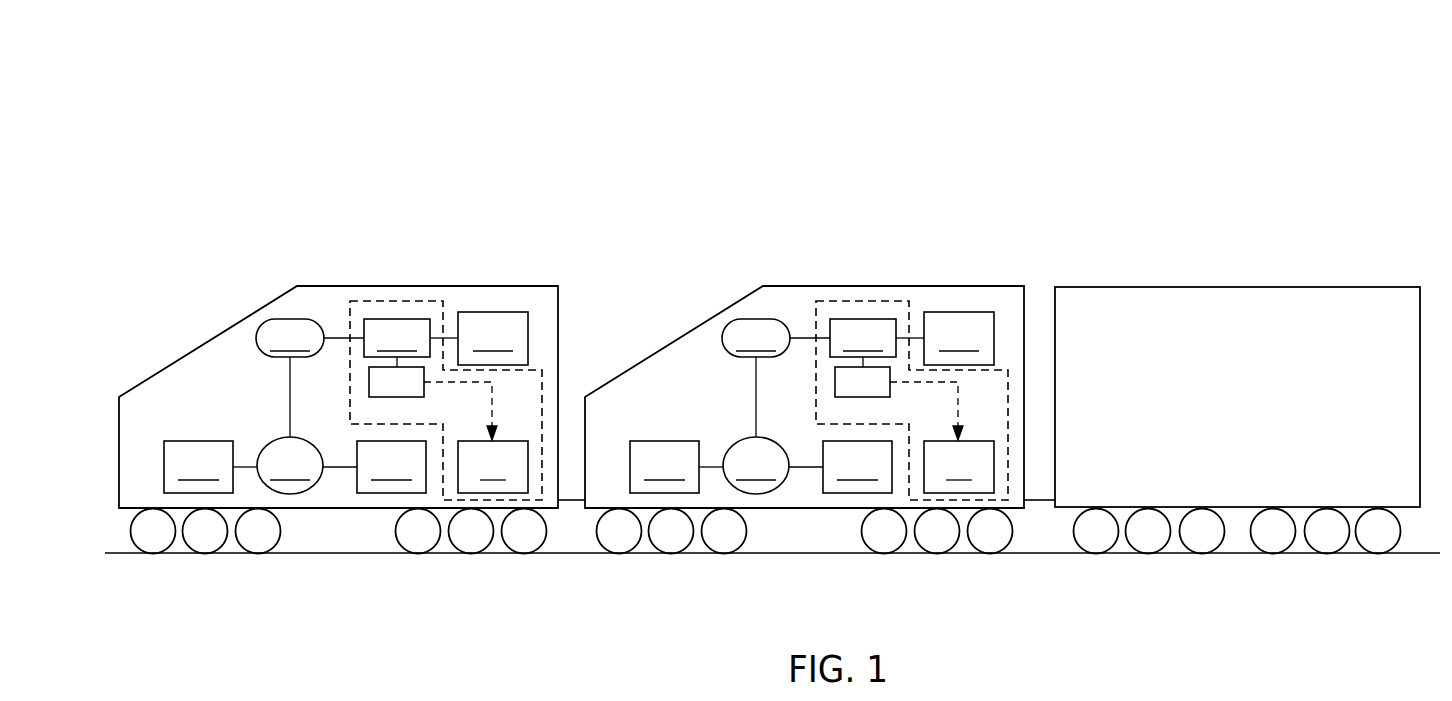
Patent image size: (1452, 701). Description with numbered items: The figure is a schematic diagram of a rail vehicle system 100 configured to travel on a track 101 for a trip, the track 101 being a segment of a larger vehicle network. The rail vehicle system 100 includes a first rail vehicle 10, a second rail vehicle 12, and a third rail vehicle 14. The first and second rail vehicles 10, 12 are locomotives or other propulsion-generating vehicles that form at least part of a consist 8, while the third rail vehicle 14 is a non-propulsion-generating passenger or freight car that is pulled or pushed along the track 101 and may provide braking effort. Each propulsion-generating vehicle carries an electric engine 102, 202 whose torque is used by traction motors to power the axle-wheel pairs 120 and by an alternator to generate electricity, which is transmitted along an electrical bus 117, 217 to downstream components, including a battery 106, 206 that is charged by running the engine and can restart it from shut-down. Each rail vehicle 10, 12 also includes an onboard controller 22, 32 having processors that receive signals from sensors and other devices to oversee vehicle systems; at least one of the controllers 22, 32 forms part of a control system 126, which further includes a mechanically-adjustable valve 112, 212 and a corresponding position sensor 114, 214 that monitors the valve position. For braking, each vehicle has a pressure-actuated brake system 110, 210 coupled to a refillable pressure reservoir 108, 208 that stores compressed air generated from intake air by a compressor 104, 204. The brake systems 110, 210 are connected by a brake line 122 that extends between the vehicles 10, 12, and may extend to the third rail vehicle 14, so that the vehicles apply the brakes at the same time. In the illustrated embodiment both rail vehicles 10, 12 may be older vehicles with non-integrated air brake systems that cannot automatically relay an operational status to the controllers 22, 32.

The rail vehicle system 100 is at (1262, 90).
The consist 8 is at (938, 176).
The first rail vehicle 10 is at (475, 286).
The second rail vehicle 12 is at (930, 286).
The third rail vehicle 14 is at (1238, 287).
The track 101 is at (1040, 555).
The electric engine 102 is at (198, 467).
The compressor 104 is at (290, 465).
The battery 106 is at (391, 467).
The pressure reservoir 108 is at (290, 338).
The pressure-actuated brake system 110 is at (493, 338).
The mechanically-adjustable valve 112 is at (397, 338).
The position sensor 114 is at (369, 380).
The onboard controller 22 is at (493, 467).
The electrical bus 117 is at (340, 470).
The axle-wheel pairs 120 is at (208, 540).
The brake line 122 is at (567, 502).
The control system 126 is at (395, 301).
The electric engine 202 is at (664, 467).
The compressor 204 is at (756, 465).
The battery 206 is at (857, 467).
The pressure reservoir 208 is at (756, 338).
The pressure-actuated brake system 210 is at (959, 338).
The mechanically-adjustable valve 212 is at (863, 338).
The position sensor 214 is at (835, 381).
The onboard controller 32 is at (959, 467).
The electrical bus 217 is at (806, 470).